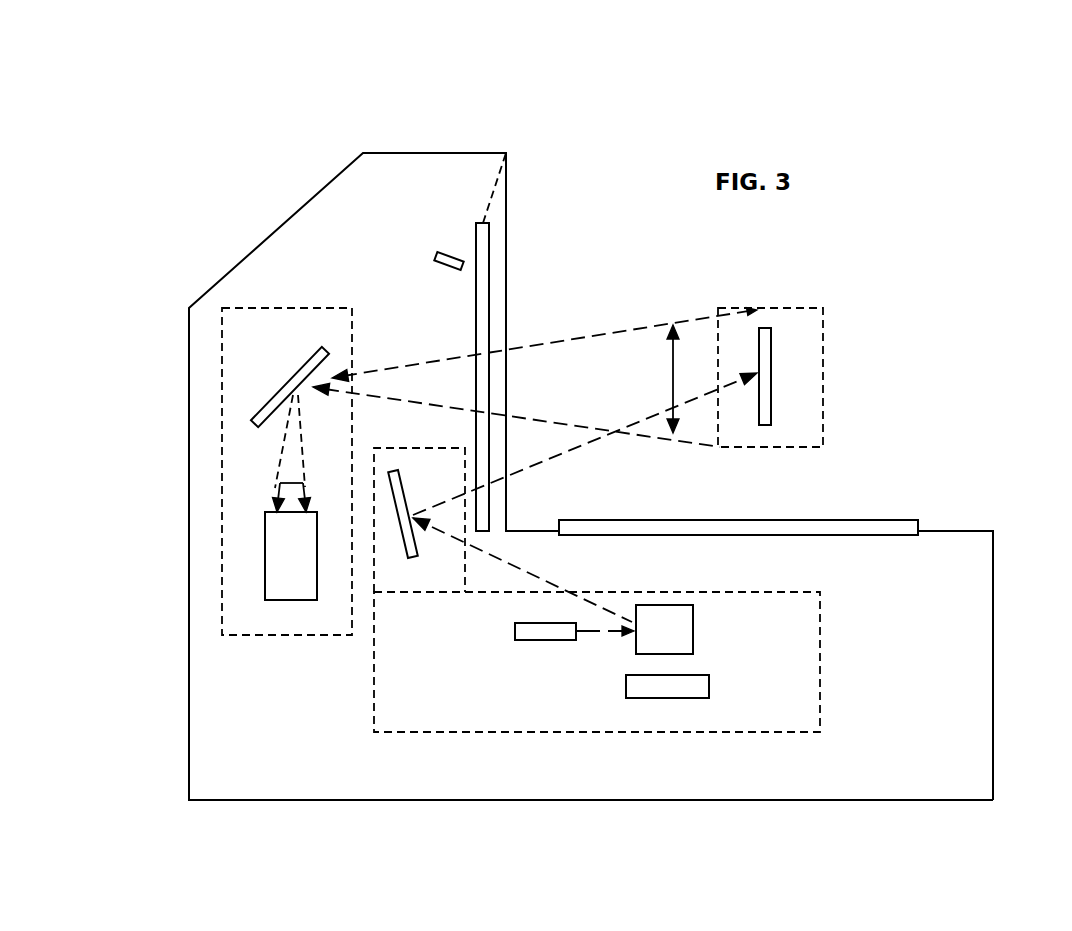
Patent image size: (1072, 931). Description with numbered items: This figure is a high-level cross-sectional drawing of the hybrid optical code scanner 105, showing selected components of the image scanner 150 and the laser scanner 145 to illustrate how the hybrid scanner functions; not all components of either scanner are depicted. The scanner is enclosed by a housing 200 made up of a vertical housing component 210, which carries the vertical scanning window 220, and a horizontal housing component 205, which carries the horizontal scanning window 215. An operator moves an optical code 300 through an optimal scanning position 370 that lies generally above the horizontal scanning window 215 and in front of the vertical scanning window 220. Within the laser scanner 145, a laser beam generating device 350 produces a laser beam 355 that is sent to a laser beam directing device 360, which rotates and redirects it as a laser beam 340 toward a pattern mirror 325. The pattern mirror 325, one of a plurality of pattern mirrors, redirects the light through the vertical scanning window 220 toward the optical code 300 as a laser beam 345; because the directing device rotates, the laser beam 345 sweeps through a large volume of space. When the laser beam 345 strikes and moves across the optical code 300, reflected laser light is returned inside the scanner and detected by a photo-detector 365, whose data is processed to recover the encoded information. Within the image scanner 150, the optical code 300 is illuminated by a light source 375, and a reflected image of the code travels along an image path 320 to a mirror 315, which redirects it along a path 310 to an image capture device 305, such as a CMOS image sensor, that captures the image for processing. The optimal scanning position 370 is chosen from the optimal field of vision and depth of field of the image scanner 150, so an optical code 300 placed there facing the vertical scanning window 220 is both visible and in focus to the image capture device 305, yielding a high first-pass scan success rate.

The hybrid optical code scanner 105 is at (195, 66).
The laser scanner 145 is at (820, 652).
The image scanner 150 is at (281, 307).
The housing 200 is at (293, 757).
The horizontal housing component 205 is at (970, 530).
The vertical housing component 210 is at (475, 153).
The horizontal scanning window 215 is at (893, 520).
The vertical scanning window 220 is at (474, 243).
The optical code 300 is at (771, 403).
The image capture device 305 is at (265, 573).
The path 310 is at (282, 456).
The mirror 315 is at (275, 396).
The image path 320 is at (673, 378).
The pattern mirror 325 is at (397, 560).
The laser beam 340 is at (475, 563).
The laser beam 345 is at (565, 450).
The laser beam generating device 350 is at (529, 640).
The laser beam 355 is at (618, 634).
The laser beam directing device 360 is at (693, 634).
The photo-detector 365 is at (709, 687).
The optimal scanning position 370 is at (823, 333).
The light source 375 is at (435, 257).